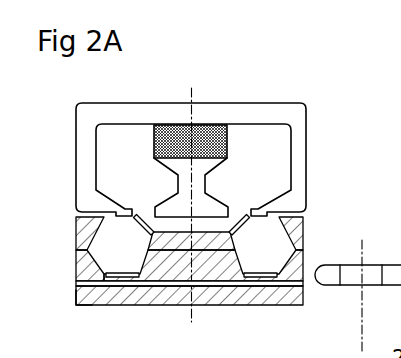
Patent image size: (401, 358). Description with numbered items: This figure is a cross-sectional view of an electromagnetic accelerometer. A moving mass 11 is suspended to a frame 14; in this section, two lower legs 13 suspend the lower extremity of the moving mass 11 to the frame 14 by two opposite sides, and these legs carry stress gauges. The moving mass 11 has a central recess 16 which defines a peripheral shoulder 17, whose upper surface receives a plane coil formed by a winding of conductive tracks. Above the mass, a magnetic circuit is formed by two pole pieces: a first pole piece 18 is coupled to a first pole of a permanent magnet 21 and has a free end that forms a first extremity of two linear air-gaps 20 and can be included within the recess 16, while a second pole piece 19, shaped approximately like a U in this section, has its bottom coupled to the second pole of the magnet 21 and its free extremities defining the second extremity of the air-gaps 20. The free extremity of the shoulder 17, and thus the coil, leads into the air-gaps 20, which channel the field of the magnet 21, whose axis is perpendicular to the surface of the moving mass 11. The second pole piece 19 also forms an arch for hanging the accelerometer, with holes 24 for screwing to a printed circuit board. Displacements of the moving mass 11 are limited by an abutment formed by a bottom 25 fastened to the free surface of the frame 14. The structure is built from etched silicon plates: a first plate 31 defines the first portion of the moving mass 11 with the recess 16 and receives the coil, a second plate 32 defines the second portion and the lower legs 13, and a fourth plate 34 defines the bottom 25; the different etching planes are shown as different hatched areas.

The moving mass 11 is at (238, 265).
The lower legs 13 is at (115, 273).
The frame 14 is at (306, 227).
The central recess 16 is at (207, 224).
The peripheral shoulder 17 is at (139, 227).
The first pole piece 18 is at (193, 205).
The second pole piece 19 is at (245, 113).
The air-gaps 20 is at (140, 208).
The permanent magnet 21 is at (155, 135).
The holes 24 is at (366, 262).
The bottom 25 is at (227, 297).
The first plate 31 is at (77, 233).
The second plate 32 is at (77, 268).
The fourth plate 34 is at (76, 305).